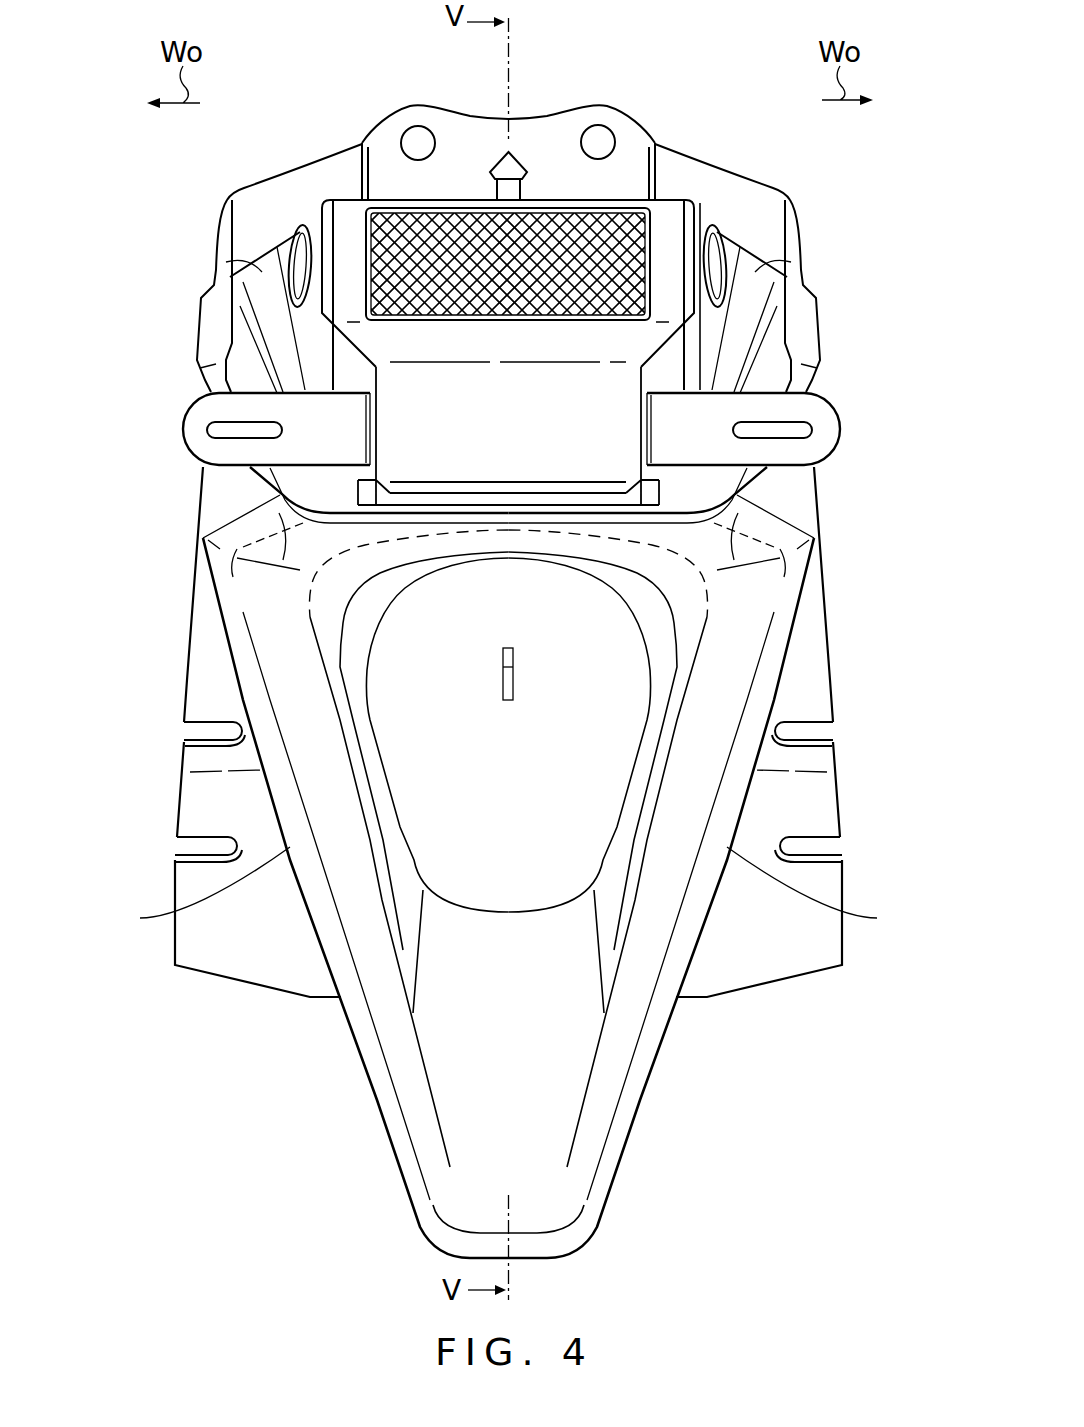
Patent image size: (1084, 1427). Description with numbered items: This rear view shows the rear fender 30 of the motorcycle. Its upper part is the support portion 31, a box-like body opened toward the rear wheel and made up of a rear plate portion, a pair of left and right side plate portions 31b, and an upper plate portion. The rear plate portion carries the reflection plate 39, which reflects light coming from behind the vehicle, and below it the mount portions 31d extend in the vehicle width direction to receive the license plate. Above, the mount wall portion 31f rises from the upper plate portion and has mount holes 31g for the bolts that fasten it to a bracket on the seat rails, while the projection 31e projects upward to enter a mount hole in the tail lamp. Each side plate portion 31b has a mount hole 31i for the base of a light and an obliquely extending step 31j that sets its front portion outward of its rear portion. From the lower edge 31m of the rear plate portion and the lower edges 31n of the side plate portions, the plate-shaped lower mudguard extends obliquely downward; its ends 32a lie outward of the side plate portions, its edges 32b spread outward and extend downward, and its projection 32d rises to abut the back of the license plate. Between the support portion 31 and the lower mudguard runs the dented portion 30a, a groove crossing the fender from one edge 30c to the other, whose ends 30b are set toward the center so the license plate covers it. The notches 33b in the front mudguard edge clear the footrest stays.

The rear fender 30 is at (313, 108).
The support portion 31 is at (622, 192).
The side plate portion 31b is at (236, 339).
The mount portion 31d is at (186, 428).
The projection 31e is at (520, 156).
The mount wall portion 31f is at (477, 125).
The mount hole 31g is at (409, 130).
The mount hole 31i is at (291, 246).
The step 31j is at (262, 272).
The lower edge 31m is at (549, 508).
The lower edge 31n is at (293, 493).
The reflection plate 39 is at (642, 218).
The dented portion 30a is at (505, 513).
The end of dented portion 30b is at (283, 560).
The edge of rear fender 30c is at (270, 491).
The end of lower mudguard 32a is at (203, 538).
The edge of lower mudguard 32b is at (512, 732).
The projection 32d is at (514, 655).
The notch 33b is at (190, 733).